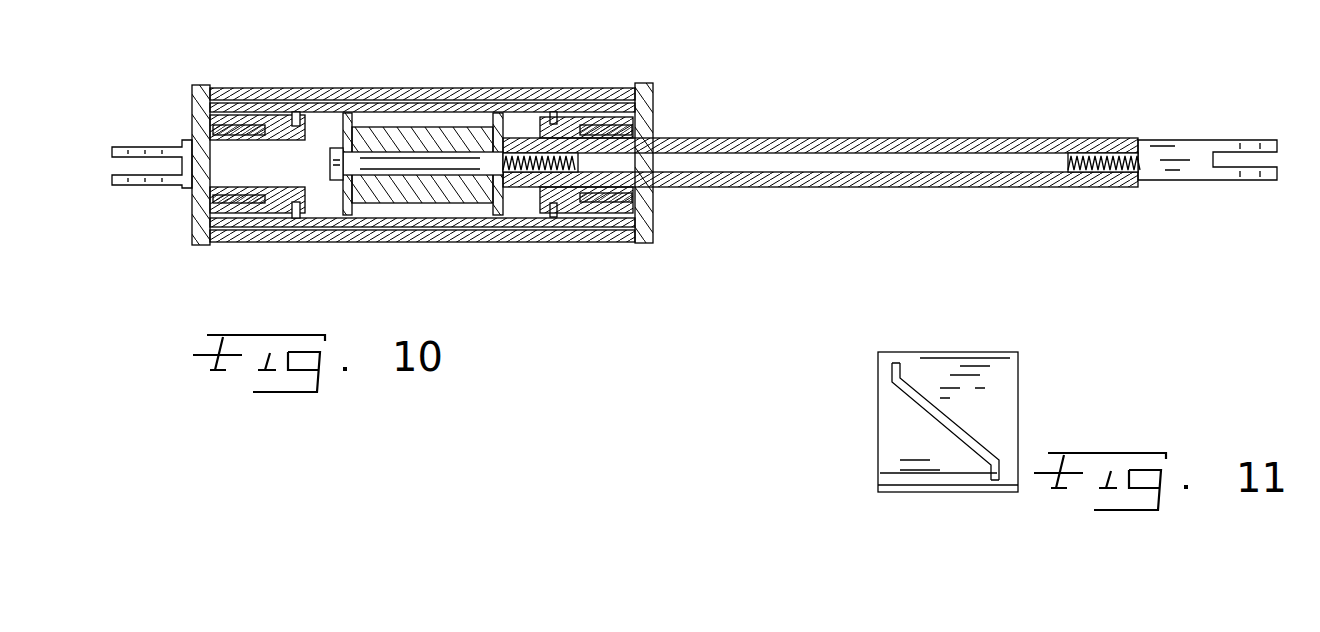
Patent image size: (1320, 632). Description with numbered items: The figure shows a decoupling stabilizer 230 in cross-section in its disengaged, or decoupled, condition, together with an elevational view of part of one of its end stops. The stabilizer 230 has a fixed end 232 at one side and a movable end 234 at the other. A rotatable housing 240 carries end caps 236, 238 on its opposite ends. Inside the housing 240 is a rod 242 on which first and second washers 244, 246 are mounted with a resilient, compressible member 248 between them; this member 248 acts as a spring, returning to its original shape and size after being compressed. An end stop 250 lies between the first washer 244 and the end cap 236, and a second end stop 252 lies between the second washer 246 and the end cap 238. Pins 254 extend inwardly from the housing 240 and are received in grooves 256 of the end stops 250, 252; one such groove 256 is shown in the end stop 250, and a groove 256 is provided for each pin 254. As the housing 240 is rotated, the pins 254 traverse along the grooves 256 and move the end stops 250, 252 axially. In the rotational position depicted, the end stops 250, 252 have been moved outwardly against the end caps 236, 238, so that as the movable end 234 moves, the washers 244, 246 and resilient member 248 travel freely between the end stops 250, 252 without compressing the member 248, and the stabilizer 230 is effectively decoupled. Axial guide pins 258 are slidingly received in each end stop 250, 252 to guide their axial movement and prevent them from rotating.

In FIG. 10, the decoupling stabilizer 230 is at (597, 255).
In FIG. 10, the fixed end 232 is at (152, 147).
In FIG. 10, the movable end 234 is at (1192, 145).
In FIG. 10, the end cap 236 is at (195, 233).
In FIG. 10, the end cap 238 is at (643, 233).
In FIG. 10, the rotatable housing 240 is at (443, 242).
In FIG. 10, the rod 242 is at (414, 160).
In FIG. 10, the first washer 244 is at (348, 120).
In FIG. 10, the second washer 246 is at (500, 125).
In FIG. 10, the resilient compressible member 248 is at (453, 135).
In FIG. 10, the end stop 250 is at (243, 205).
In FIG. 11, the end stop 250 is at (998, 397).
In FIG. 10, the second end stop 252 is at (577, 128).
In FIG. 10, the pins 254 is at (295, 114).
In FIG. 11, the groove 256 is at (913, 403).
In FIG. 10, the axial guide pins 258 is at (243, 128).